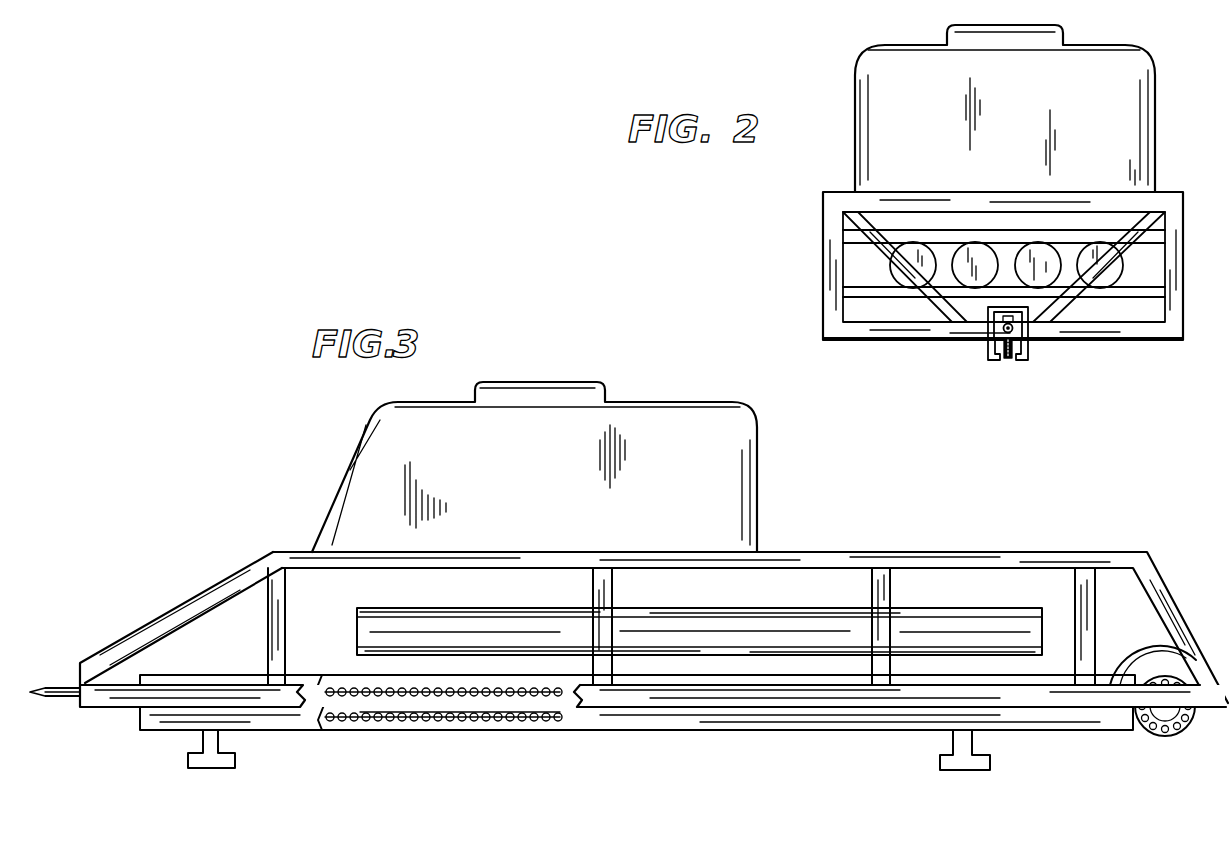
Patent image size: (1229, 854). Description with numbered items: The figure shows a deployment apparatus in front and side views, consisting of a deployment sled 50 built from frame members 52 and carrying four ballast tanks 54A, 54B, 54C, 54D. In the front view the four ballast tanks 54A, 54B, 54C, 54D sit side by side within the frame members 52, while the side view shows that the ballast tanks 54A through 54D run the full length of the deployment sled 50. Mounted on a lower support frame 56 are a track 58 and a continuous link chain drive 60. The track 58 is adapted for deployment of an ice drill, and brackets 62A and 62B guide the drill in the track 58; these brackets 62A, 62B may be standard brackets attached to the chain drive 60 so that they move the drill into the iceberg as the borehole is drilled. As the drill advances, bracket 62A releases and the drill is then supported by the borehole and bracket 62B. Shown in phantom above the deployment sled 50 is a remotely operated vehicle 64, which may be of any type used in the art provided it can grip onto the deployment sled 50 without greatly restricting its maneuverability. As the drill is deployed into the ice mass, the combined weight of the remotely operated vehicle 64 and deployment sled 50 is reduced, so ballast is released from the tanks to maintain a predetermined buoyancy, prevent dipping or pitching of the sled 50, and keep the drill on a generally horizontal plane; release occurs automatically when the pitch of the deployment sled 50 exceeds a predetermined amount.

In FIG. 2, the deployment sled 50 is at (1199, 203).
In FIG. 3, the deployment sled 50 is at (157, 608).
In FIG. 2, the frame members 52 is at (832, 250).
In FIG. 3, the frame members 52 is at (290, 556).
In FIG. 2, the ballast tank 54A is at (904, 277).
In FIG. 3, the ballast tank 54A is at (976, 630).
In FIG. 2, the ballast tank 54B is at (985, 224).
In FIG. 2, the ballast tank 54C is at (1038, 254).
In FIG. 2, the ballast tank 54D is at (1106, 278).
In FIG. 2, the lower support frame 56 is at (1110, 340).
In FIG. 3, the lower support frame 56 is at (1198, 708).
In FIG. 2, the track 58 is at (988, 354).
In FIG. 3, the track 58 is at (638, 720).
In FIG. 2, the continuous link chain drive 60 is at (1008, 356).
In FIG. 3, the continuous link chain drive 60 is at (445, 725).
In FIG. 3, the bracket 62A is at (232, 758).
In FIG. 3, the bracket 62B is at (964, 762).
In FIG. 2, the remotely operated vehicle 64 is at (888, 116).
In FIG. 3, the remotely operated vehicle 64 is at (685, 490).